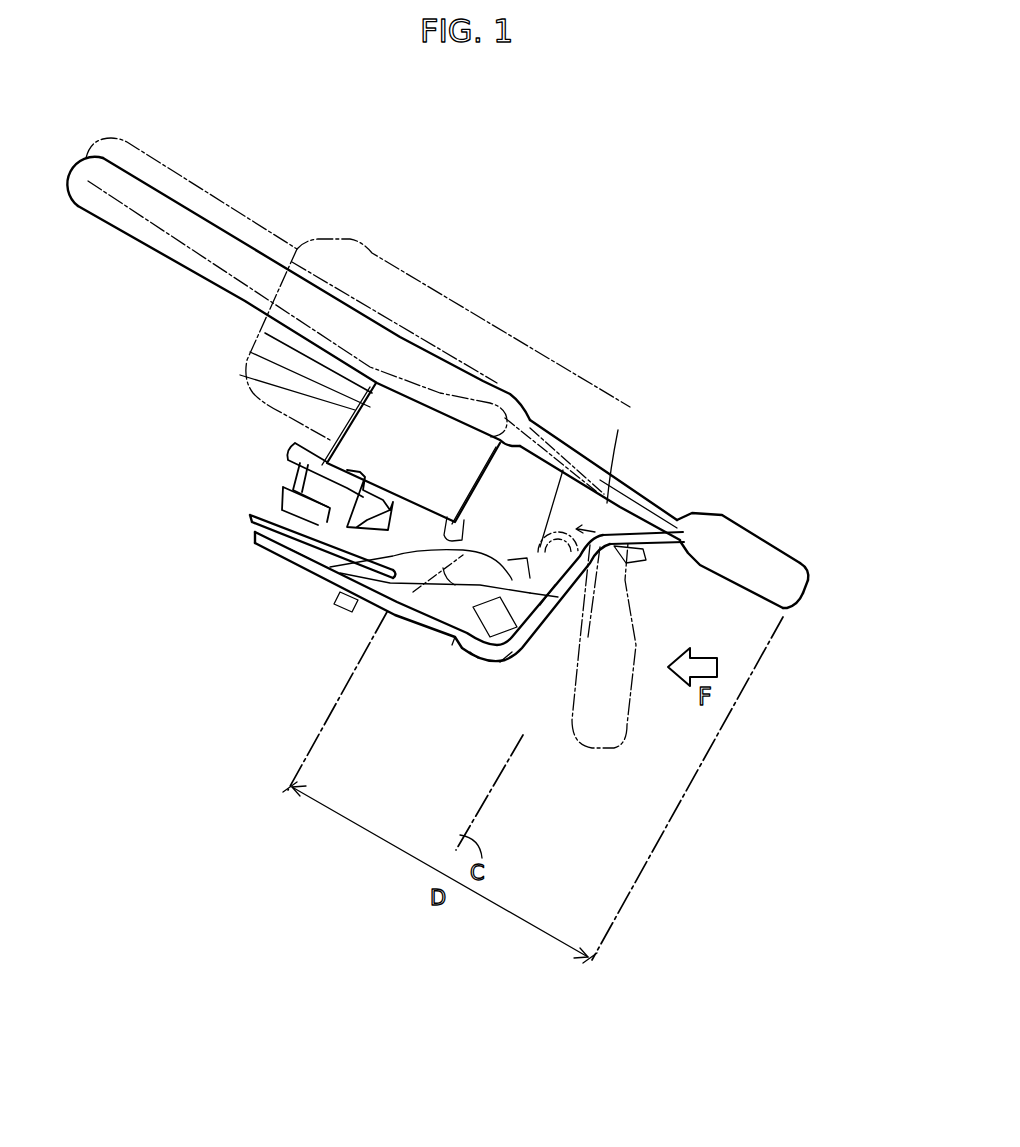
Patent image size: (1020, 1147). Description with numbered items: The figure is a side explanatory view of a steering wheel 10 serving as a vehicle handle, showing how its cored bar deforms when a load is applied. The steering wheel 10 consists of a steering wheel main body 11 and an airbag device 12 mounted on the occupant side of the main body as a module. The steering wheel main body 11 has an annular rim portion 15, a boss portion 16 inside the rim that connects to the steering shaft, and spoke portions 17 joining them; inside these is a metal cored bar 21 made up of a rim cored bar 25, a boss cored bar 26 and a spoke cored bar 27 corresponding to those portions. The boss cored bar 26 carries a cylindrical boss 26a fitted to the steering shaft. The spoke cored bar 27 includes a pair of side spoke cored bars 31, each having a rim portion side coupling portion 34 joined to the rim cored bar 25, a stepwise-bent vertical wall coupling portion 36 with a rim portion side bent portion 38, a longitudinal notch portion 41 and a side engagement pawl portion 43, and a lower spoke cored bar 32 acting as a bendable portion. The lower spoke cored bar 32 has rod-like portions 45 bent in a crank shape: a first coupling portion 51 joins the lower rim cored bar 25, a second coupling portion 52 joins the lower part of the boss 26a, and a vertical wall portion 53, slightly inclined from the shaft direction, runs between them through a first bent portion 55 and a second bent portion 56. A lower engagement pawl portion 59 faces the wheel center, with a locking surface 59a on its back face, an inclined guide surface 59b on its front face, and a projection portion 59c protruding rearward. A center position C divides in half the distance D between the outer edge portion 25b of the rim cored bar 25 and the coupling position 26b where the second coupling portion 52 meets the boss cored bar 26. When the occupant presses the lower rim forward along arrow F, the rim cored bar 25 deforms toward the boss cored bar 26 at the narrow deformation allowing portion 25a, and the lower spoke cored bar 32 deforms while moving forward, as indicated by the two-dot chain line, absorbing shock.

The steering wheel 10 is at (107, 146).
The steering wheel main body 11 is at (156, 186).
The airbag device 12 is at (370, 253).
The rim portion 15 is at (803, 580).
The boss portion 16 is at (249, 516).
The spoke portion 17 is at (657, 517).
The cored bar 21 is at (793, 572).
The rim cored bar 25 is at (760, 543).
The deformation allowing portion 25a is at (618, 430).
The outer edge portion 25b is at (803, 597).
The boss cored bar 26 is at (255, 538).
The boss 26a is at (300, 551).
The coupling position 26b is at (387, 617).
The spoke cored bar 27 is at (640, 517).
The side spoke cored bar 31 is at (265, 333).
The lower spoke cored bar 32 is at (653, 550).
The rim portion side coupling portion 34 is at (250, 352).
The vertical wall coupling portion 36 is at (305, 484).
The rim portion side bent portion 38 is at (333, 442).
The notch portion 41 is at (308, 460).
The side engagement pawl portion 43 is at (240, 375).
The rod-like portion 45 is at (540, 605).
The first coupling portion 51 is at (663, 533).
The second coupling portion 52 is at (475, 652).
The vertical wall portion 53 is at (558, 597).
The first bent portion 55 is at (617, 517).
The second bent portion 56 is at (512, 652).
The lower engagement pawl portion 59 is at (330, 567).
The locking surface 59a is at (537, 605).
The guide surface 59b is at (563, 470).
The projection portion 59c is at (338, 598).